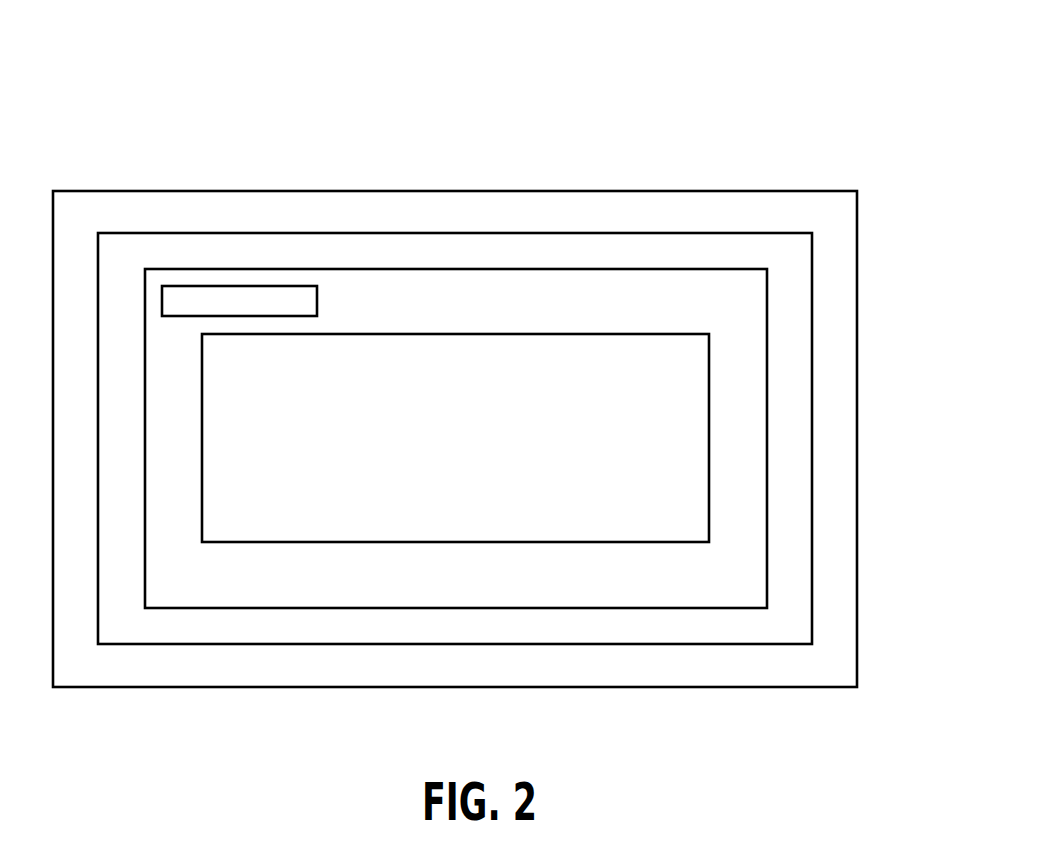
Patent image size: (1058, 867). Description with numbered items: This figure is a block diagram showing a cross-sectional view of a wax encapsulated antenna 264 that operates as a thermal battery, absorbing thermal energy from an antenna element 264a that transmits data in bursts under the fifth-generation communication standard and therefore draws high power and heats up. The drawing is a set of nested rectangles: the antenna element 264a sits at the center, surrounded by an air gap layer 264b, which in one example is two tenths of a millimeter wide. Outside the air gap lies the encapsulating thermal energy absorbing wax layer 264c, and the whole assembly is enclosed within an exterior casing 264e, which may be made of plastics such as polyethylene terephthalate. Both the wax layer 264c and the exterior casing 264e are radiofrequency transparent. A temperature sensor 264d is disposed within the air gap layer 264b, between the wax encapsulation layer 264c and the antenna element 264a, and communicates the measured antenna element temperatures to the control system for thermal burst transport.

The wax encapsulated antenna 264 is at (96, 93).
The antenna element 264a is at (568, 376).
The air gap layer 264b is at (722, 420).
The wax encapsulation layer 264c is at (407, 248).
The temperature sensor 264d is at (269, 288).
The exterior casing 264e is at (826, 327).